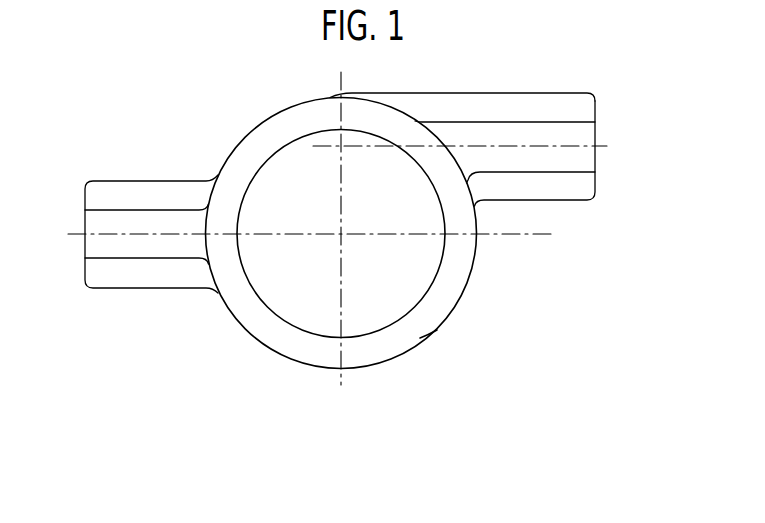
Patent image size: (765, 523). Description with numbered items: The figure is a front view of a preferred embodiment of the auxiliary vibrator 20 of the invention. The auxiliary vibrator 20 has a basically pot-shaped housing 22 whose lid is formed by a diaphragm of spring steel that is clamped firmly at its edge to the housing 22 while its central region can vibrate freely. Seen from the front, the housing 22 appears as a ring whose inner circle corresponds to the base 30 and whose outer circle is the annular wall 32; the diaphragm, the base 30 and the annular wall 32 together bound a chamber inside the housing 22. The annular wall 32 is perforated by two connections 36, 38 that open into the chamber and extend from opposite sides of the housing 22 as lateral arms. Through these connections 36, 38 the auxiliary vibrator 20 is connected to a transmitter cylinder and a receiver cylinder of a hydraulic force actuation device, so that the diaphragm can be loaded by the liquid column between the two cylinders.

The auxiliary vibrator 20 is at (405, 94).
The housing 22 is at (237, 325).
The base 30 is at (402, 261).
The annular wall 32 is at (437, 330).
The connection 36 is at (575, 137).
The connection 38 is at (100, 248).